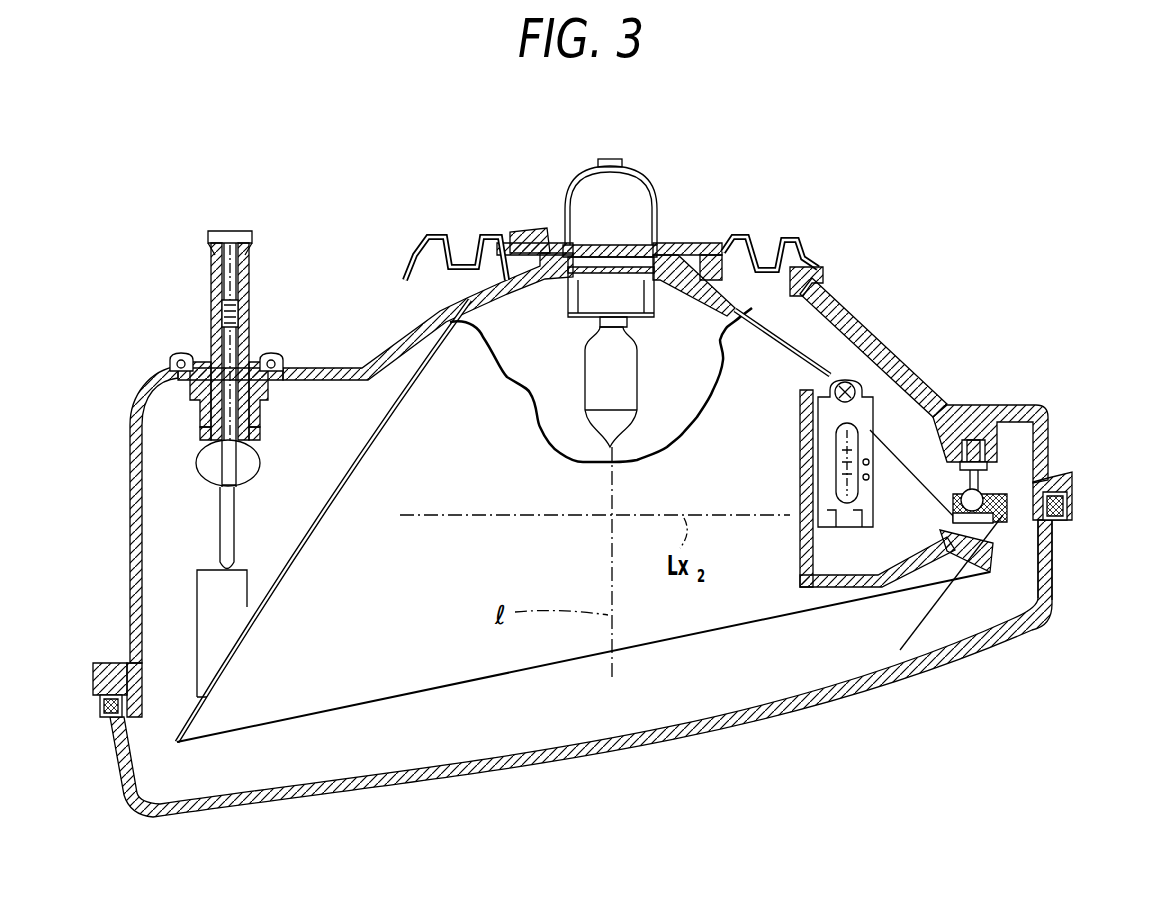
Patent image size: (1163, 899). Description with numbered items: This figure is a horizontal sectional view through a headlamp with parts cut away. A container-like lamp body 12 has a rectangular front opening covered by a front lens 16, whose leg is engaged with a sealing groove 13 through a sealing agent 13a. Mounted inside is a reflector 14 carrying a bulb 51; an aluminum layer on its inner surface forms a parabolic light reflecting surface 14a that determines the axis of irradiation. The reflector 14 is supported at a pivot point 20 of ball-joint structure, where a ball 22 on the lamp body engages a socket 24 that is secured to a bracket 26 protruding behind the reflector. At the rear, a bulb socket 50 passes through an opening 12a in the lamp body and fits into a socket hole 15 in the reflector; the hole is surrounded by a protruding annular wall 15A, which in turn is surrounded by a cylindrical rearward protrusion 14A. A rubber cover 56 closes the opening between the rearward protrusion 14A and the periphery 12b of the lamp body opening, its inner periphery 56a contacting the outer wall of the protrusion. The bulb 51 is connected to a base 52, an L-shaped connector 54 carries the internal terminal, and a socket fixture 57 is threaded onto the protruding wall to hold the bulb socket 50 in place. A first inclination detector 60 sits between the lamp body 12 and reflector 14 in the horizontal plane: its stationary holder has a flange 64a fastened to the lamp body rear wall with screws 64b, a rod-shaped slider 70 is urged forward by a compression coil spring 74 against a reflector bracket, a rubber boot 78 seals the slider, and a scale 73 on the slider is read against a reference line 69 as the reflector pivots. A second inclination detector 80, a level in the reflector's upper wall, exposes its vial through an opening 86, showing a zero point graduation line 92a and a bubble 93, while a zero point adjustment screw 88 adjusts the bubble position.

The lamp body 12 is at (850, 337).
The opening 12a is at (769, 308).
The periphery of the lamp body opening 12b is at (822, 276).
The sealing groove 13 is at (104, 708).
The sealing agent 13a is at (110, 714).
The reflector 14 is at (832, 367).
The cylindrical rearward protrusion 14A is at (735, 300).
The parabolic light reflecting surface 14a is at (728, 244).
The socket hole 15 is at (572, 314).
The protruding annular wall 15A is at (685, 268).
The front lens 16 is at (588, 772).
The pivot point 20 is at (996, 470).
The ball 22 is at (984, 490).
The socket 24 is at (1052, 601).
The bracket 26 is at (1052, 557).
The bulb socket 50 is at (632, 207).
The bulb 51 is at (637, 394).
The base 52 is at (566, 252).
The L-shaped connector 54 is at (597, 207).
The rubber cover 56 is at (798, 228).
The inner periphery of the rubber cover 56a is at (465, 262).
The socket fixture 57 is at (512, 252).
The first inclination detector 60 is at (176, 423).
The flange 64a is at (170, 368).
The screws 64b is at (180, 362).
The reference line 69 is at (220, 312).
The slider 70 is at (222, 532).
The scale 73 is at (250, 302).
The compression coil spring 74 is at (220, 250).
The rubber boot 78 is at (210, 472).
The second inclination detector 80 is at (950, 442).
The opening 86 is at (840, 490).
The zero point adjustment screw 88 is at (858, 394).
The zero point graduation line 92a is at (806, 434).
The bubble 93 is at (835, 472).